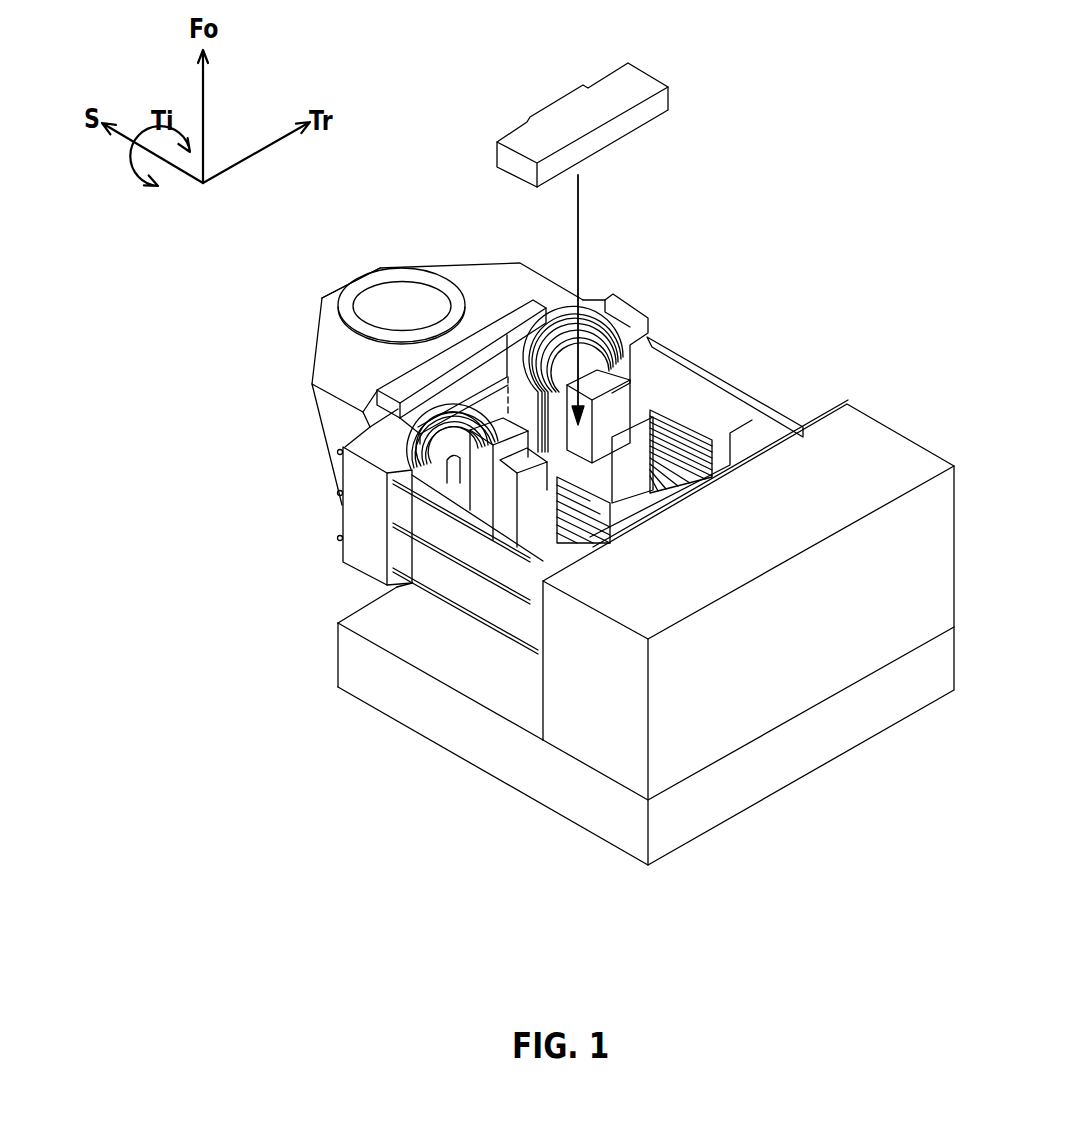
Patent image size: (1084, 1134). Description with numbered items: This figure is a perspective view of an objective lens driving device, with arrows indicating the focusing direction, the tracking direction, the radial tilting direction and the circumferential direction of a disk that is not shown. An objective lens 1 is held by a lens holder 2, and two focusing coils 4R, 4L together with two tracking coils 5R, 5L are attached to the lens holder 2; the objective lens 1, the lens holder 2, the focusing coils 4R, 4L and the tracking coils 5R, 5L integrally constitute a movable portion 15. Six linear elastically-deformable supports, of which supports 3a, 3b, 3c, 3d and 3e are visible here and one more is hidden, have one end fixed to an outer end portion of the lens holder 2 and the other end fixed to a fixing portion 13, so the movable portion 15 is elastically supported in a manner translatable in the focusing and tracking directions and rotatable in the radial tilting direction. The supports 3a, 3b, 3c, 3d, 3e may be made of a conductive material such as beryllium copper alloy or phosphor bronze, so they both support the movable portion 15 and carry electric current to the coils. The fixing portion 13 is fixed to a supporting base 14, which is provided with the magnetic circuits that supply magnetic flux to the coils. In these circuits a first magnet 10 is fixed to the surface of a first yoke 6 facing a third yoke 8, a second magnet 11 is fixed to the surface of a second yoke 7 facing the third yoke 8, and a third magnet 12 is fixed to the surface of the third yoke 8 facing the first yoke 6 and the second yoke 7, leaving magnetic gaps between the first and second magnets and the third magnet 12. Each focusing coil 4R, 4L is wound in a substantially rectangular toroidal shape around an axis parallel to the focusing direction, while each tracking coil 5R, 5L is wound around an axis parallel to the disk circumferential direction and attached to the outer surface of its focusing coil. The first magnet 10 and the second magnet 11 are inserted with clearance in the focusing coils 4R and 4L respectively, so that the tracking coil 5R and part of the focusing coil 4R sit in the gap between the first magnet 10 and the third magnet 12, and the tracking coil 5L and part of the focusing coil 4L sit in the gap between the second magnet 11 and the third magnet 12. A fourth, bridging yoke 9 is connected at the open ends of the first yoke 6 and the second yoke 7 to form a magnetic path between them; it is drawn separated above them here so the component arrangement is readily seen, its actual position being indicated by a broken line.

The objective lens 1 is at (412, 295).
The lens holder 2 is at (340, 356).
The support 3a is at (510, 623).
The support 3b is at (483, 600).
The support 3c is at (447, 603).
The support 3d is at (757, 433).
The support 3e is at (792, 402).
The focusing coil 4L is at (693, 420).
The focusing coil 4R is at (412, 560).
The tracking coil 5L is at (620, 348).
The tracking coil 5R is at (400, 470).
The first yoke 6 is at (452, 528).
The second yoke 7 is at (673, 447).
The third yoke 8 is at (500, 348).
The fourth yoke 9 is at (568, 108).
The first magnet 10 is at (398, 510).
The second magnet 11 is at (633, 453).
The third magnet 12 is at (513, 365).
The fixing portion 13 is at (590, 720).
The supporting base 14 is at (497, 752).
The movable portion 15 is at (335, 273).